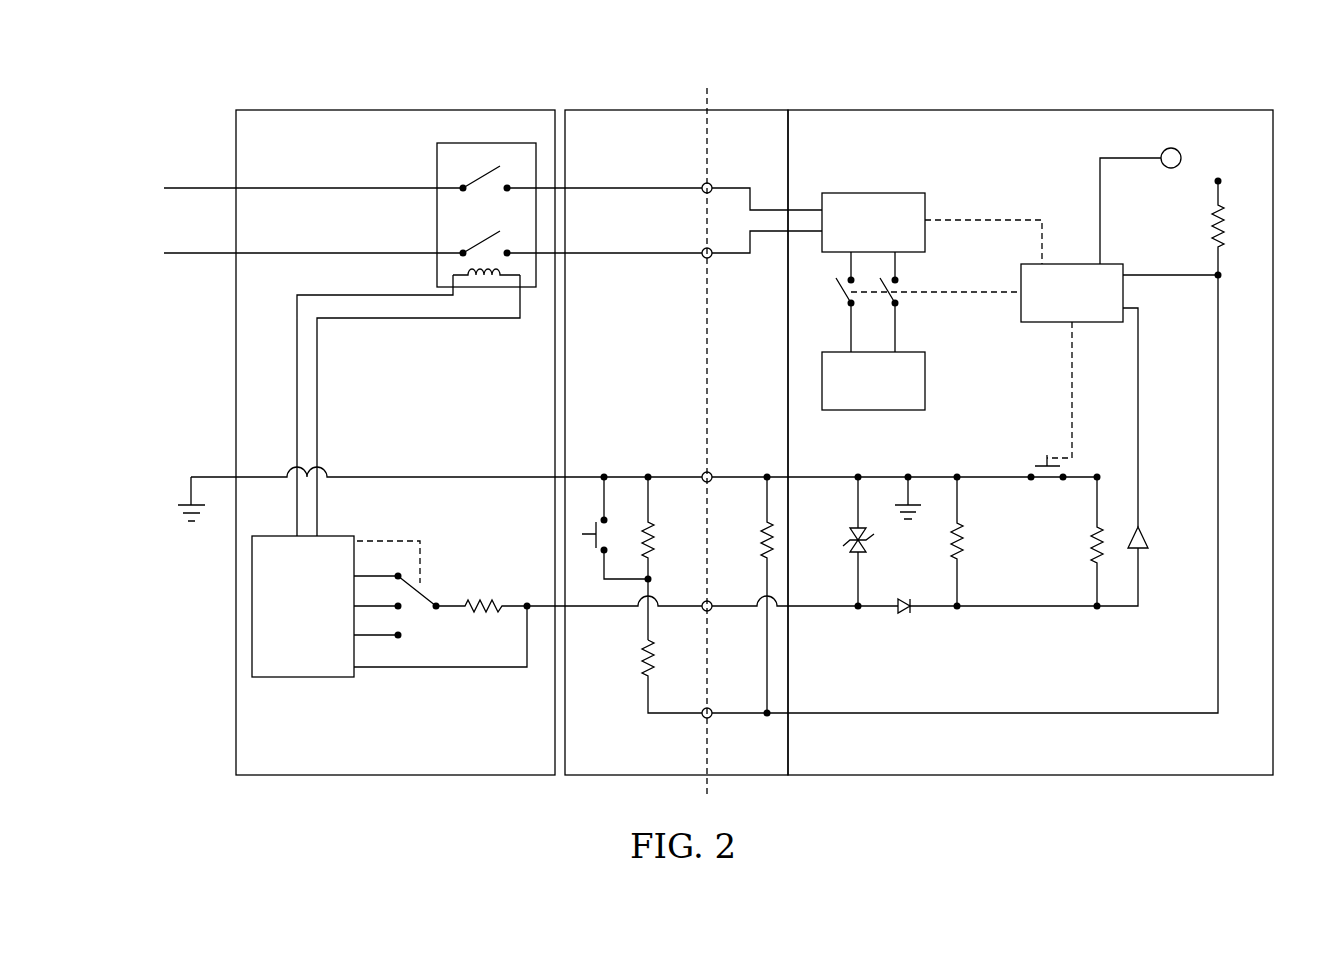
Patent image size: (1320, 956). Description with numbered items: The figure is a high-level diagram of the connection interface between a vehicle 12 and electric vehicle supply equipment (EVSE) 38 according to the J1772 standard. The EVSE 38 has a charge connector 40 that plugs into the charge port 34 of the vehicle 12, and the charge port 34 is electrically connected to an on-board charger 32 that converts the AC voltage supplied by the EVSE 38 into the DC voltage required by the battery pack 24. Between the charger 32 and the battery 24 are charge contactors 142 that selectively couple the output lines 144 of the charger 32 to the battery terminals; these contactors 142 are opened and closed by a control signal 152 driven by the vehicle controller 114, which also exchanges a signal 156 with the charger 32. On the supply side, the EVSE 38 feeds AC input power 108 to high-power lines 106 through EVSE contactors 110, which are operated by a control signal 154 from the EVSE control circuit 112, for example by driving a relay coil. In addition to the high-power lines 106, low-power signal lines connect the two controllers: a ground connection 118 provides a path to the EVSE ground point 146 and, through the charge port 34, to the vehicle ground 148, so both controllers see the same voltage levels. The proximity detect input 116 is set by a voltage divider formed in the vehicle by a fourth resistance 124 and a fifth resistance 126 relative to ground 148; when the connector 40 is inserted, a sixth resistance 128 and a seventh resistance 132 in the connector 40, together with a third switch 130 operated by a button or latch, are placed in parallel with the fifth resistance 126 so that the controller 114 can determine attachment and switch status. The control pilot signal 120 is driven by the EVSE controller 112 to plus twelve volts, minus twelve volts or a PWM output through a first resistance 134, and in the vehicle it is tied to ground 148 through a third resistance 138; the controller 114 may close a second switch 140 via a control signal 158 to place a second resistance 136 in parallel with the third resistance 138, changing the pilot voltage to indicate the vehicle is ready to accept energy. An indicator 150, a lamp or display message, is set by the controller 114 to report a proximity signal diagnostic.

The vehicle 12 is at (1082, 110).
The battery pack 24 is at (822, 380).
The charger 32 is at (872, 193).
The charge port 34 is at (788, 110).
The electric vehicle supply equipment 38 is at (338, 110).
The charge connector 40 is at (577, 110).
The high-power lines 106 is at (546, 250).
The AC input power 108 is at (164, 251).
The contactors 110 is at (482, 244).
The EVSE control circuit 112 is at (252, 605).
The controller 114 is at (1072, 264).
The proximity detect input 116 is at (717, 709).
The ground connection 118 is at (728, 477).
The control pilot signal 120 is at (718, 602).
The resistance R4 124 is at (1226, 218).
The resistance R5 126 is at (775, 562).
The resistance R6 128 is at (645, 678).
The switch S3 130 is at (582, 536).
The resistance R7 132 is at (655, 525).
The resistance R1 134 is at (490, 614).
The resistance R2 136 is at (1103, 525).
The resistance R3 138 is at (962, 558).
The switch S2 140 is at (1046, 502).
The charge contactors 142 is at (898, 302).
The output lines 144 is at (897, 277).
The ground point 146 is at (180, 491).
The ground connection 148 is at (908, 522).
The indicator 150 is at (1161, 153).
The control signal 152 is at (963, 292).
The control signal 154 is at (430, 320).
The charger control signal 156 is at (951, 219).
The control signal 158 is at (1072, 400).